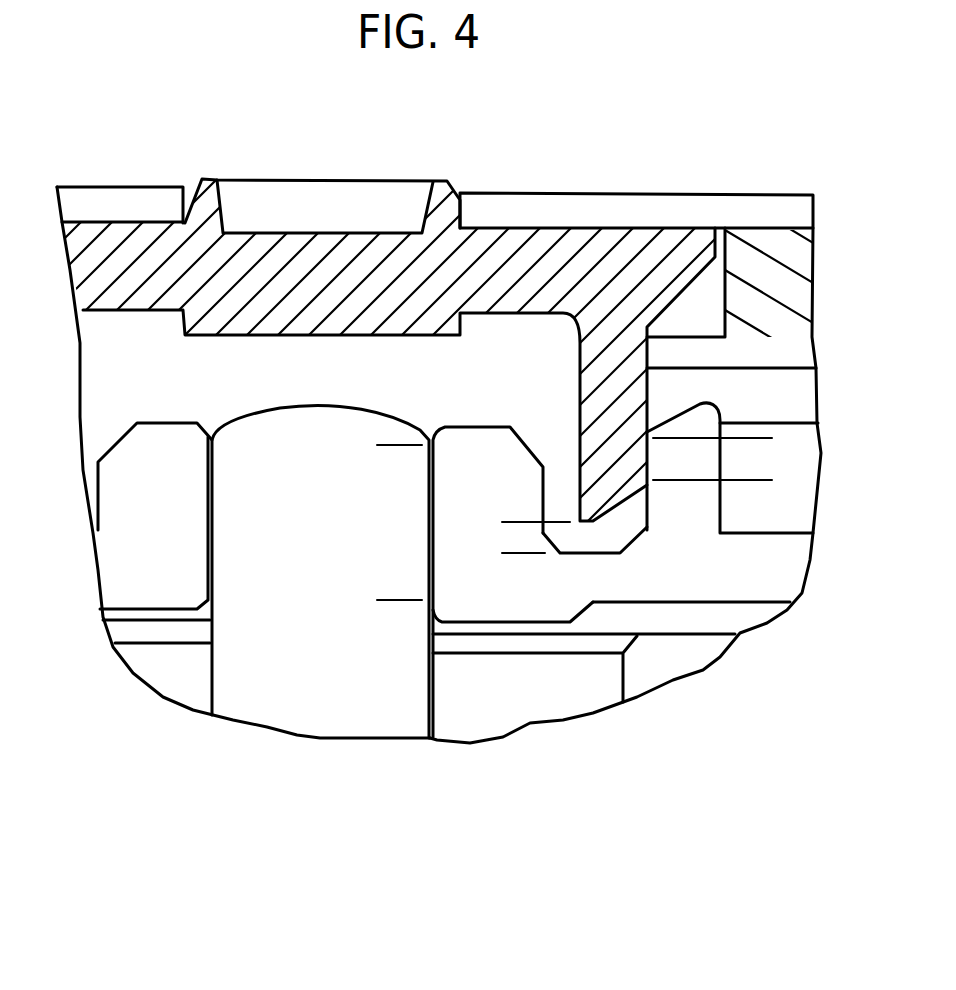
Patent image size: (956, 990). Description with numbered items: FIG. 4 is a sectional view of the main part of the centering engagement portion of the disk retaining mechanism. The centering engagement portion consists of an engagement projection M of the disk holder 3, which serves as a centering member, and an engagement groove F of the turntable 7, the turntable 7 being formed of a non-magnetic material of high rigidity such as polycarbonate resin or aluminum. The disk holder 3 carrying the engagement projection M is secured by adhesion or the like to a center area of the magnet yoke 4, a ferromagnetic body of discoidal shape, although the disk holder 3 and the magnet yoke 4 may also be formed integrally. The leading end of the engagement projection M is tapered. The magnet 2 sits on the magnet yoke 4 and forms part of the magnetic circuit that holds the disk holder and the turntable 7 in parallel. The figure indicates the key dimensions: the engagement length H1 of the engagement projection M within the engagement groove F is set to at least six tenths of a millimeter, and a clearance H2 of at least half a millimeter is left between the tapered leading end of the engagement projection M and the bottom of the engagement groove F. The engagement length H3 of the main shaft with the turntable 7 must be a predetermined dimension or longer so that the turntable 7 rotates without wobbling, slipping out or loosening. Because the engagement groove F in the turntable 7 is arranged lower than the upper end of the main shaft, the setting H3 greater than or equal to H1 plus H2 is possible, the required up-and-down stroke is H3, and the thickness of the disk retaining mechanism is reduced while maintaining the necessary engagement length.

The magnet 2 is at (762, 280).
The disk holder 3 is at (518, 237).
The magnet yoke 4 is at (638, 203).
The turntable 7 is at (743, 573).
The engagement groove F is at (561, 488).
The engagement projection M is at (600, 437).
The engagement length H1 is at (748, 398).
The clearance H2 is at (518, 487).
The engagement length of main shaft H3 is at (398, 445).